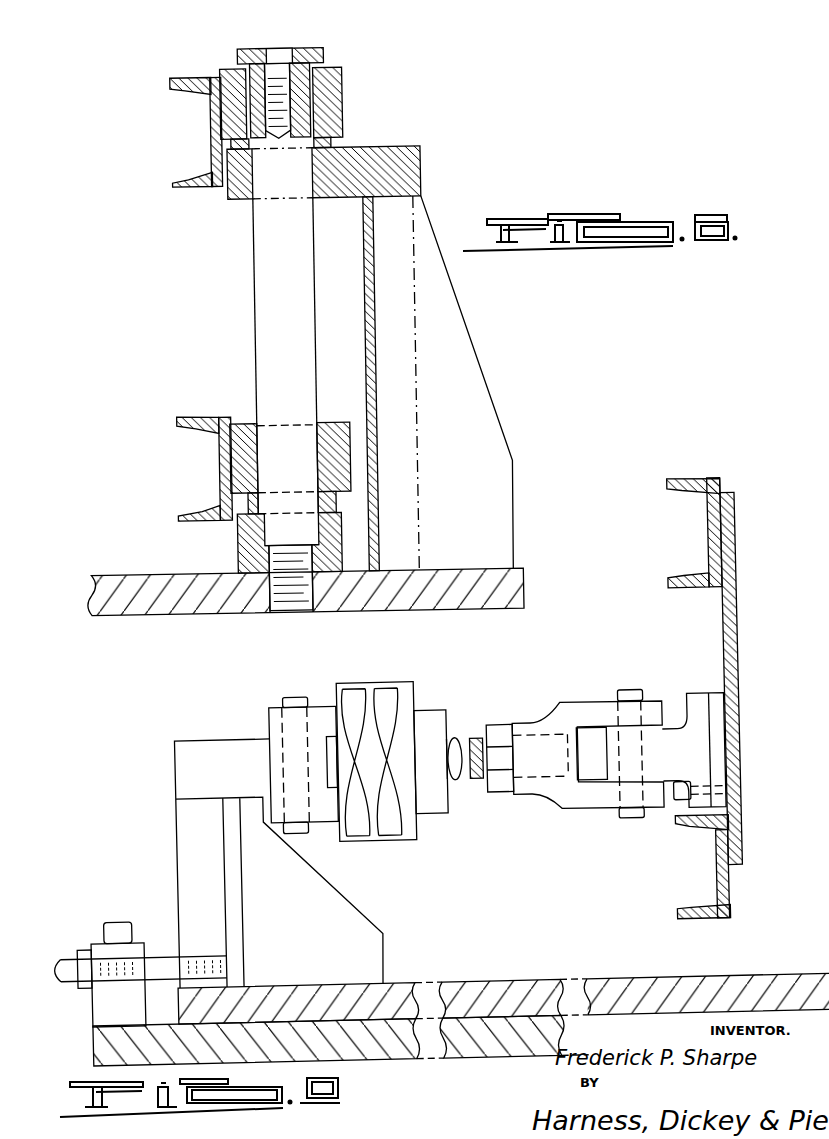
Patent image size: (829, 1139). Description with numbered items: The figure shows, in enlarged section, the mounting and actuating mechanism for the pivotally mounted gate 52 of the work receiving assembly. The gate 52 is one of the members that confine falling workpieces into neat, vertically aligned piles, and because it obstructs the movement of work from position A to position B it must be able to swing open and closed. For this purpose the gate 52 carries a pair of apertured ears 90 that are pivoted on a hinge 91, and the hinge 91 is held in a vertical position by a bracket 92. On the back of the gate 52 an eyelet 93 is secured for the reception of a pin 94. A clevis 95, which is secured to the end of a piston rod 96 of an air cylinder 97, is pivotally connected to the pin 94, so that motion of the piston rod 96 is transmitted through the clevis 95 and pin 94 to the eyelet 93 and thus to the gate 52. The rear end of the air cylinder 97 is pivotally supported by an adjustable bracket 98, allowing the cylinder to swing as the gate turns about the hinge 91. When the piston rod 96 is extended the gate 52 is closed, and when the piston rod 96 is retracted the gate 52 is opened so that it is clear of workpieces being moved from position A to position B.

In FIG. 8, the gate 52 is at (197, 74).
In FIG. 9, the gate 52 is at (742, 686).
In FIG. 8, the apertured ears 90 is at (340, 101).
In FIG. 8, the hinge 91 is at (270, 356).
In FIG. 8, the bracket 92 is at (451, 338).
In FIG. 9, the eyelet 93 is at (704, 697).
In FIG. 9, the pin 94 is at (636, 695).
In FIG. 9, the clevis 95 is at (576, 706).
In FIG. 9, the piston rod 96 is at (458, 741).
In FIG. 9, the air cylinder 97 is at (399, 690).
In FIG. 9, the adjustable bracket 98 is at (200, 837).